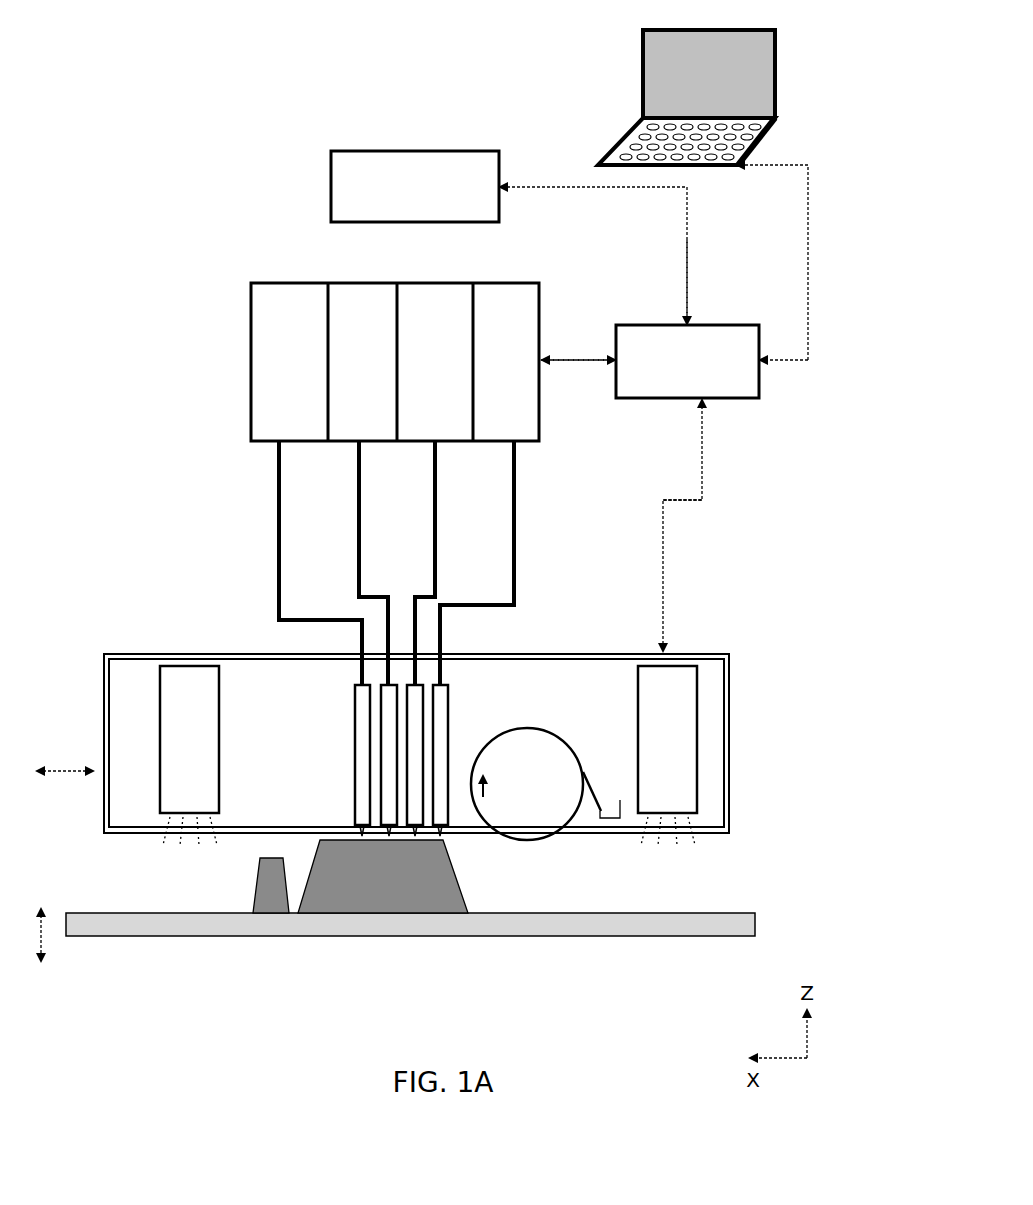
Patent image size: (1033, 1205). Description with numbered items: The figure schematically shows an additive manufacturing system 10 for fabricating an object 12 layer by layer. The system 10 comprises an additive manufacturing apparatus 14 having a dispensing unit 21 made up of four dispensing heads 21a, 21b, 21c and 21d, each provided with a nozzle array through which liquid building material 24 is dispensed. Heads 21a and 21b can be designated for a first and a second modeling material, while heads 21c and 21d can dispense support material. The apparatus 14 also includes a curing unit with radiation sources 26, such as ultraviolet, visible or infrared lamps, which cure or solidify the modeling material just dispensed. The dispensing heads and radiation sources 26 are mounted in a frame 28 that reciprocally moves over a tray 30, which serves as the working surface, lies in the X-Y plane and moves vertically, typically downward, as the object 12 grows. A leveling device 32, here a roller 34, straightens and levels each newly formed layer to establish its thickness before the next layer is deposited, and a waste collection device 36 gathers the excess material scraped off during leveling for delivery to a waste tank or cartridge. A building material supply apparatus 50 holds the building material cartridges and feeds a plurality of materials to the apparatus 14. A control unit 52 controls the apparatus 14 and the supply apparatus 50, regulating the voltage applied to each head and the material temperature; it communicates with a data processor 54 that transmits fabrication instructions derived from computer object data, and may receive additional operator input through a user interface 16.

The system 10 is at (250, 40).
The data processor 54 is at (627, 135).
The user interface 16 is at (415, 186).
The building material supply apparatus 50 is at (222, 305).
The control unit 52 is at (687, 361).
The additive manufacturing apparatus 14 is at (88, 575).
The dispensing unit 21 is at (359, 727).
The dispensing head 21a is at (443, 752).
The dispensing head 21b is at (415, 708).
The dispensing head 21c is at (388, 768).
The dispensing head 21d is at (362, 790).
The leveling device 32 is at (560, 725).
The frame 28 is at (685, 650).
The roller 34 is at (527, 784).
The radiation source 26 is at (683, 772).
The waste collection device 36 is at (598, 825).
The liquid building material 24 is at (450, 843).
The tray 30 is at (147, 921).
The object 12 is at (348, 900).